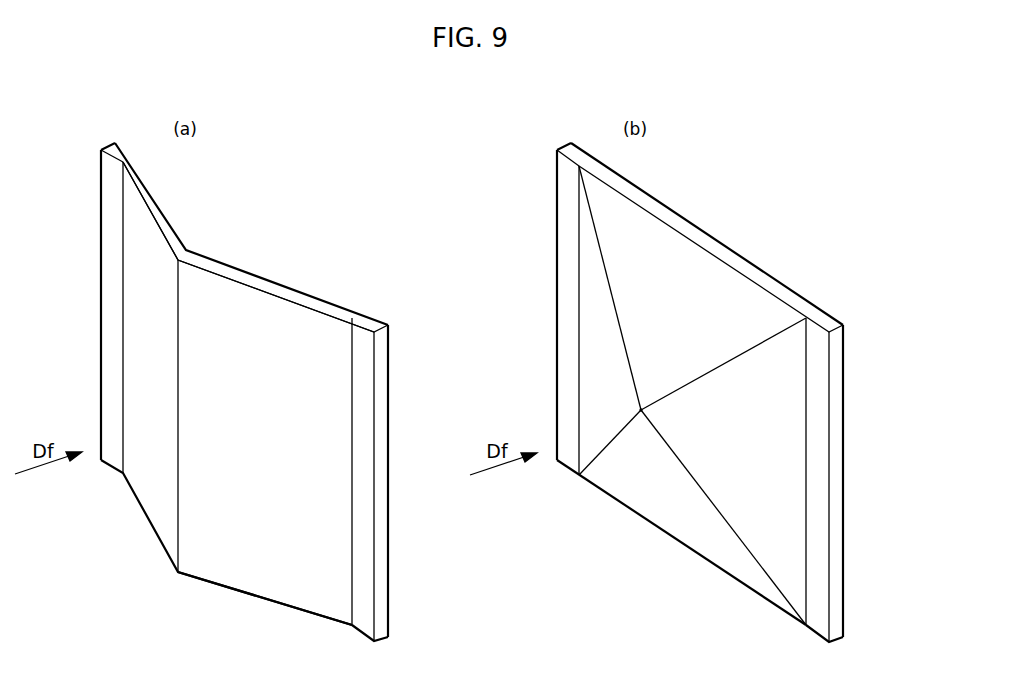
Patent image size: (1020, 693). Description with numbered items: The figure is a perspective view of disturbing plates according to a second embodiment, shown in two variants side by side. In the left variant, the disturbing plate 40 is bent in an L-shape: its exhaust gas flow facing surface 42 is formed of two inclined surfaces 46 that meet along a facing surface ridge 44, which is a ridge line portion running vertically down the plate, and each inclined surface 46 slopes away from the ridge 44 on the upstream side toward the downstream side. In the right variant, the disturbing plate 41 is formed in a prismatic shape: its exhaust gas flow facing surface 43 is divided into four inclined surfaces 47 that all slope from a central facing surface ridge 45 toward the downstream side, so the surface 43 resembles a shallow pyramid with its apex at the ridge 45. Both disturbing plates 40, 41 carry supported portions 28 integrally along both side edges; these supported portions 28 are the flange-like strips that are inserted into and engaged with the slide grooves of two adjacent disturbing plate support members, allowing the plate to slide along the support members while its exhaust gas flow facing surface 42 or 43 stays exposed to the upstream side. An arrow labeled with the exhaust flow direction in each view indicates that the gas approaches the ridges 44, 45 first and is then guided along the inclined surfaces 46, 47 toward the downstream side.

The supported portion 28 is at (107, 232).
The disturbing plate 40 is at (372, 318).
The disturbing plate 41 is at (832, 318).
The exhaust gas flow facing surface 42 is at (265, 572).
The exhaust gas flow facing surface 43 is at (722, 548).
The facing surface ridge 44 is at (178, 443).
The facing surface ridge 45 is at (600, 468).
The inclined surface 46 is at (150, 342).
The inclined surface 47 is at (605, 342).